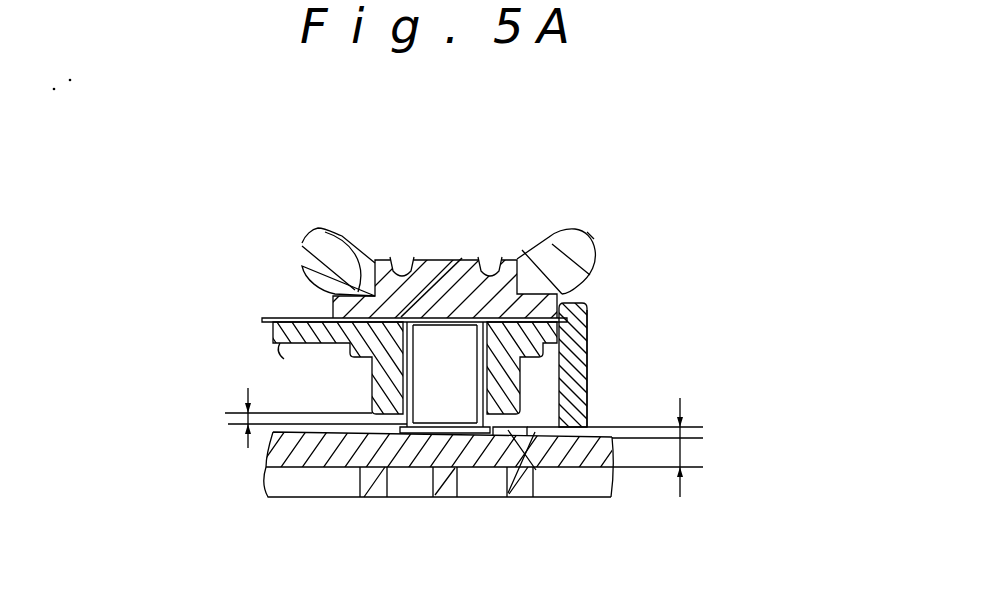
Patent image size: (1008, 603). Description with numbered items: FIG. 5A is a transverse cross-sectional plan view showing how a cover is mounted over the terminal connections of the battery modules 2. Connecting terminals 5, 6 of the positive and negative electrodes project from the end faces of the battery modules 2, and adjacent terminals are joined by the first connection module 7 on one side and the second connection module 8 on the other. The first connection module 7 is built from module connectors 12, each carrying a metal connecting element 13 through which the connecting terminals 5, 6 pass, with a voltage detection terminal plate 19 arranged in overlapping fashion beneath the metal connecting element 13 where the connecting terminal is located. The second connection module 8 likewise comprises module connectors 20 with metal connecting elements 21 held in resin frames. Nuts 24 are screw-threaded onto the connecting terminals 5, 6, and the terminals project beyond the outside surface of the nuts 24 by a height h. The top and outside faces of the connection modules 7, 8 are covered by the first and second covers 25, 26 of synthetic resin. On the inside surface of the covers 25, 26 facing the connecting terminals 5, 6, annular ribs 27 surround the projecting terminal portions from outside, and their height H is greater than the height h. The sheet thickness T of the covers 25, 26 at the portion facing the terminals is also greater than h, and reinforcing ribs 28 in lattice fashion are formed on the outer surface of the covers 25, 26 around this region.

The battery module 2 is at (598, 250).
The voltage detection terminal plate 19 is at (312, 232).
The metal connecting element 13 is at (327, 280).
The metal connecting element 21 is at (297, 318).
The nut 24 is at (370, 380).
The connecting terminal 5 is at (450, 281).
The connecting terminal 6 is at (446, 372).
The height of projecting portion h is at (227, 415).
The first cover 25 is at (539, 494).
The second cover 26 is at (611, 490).
The annular rib 27 is at (535, 468).
The reinforcing rib 28 is at (533, 468).
The first connection module 7 is at (613, 365).
The second connection module 8 is at (611, 353).
The module connector 12 is at (668, 368).
The module connector 20 is at (591, 375).
The height of annular rib H is at (703, 433).
The sheet thickness T is at (703, 457).